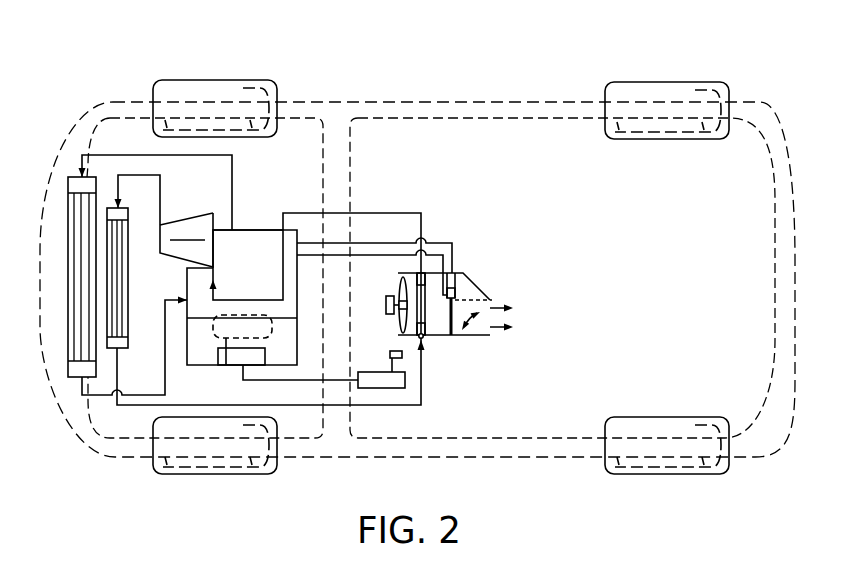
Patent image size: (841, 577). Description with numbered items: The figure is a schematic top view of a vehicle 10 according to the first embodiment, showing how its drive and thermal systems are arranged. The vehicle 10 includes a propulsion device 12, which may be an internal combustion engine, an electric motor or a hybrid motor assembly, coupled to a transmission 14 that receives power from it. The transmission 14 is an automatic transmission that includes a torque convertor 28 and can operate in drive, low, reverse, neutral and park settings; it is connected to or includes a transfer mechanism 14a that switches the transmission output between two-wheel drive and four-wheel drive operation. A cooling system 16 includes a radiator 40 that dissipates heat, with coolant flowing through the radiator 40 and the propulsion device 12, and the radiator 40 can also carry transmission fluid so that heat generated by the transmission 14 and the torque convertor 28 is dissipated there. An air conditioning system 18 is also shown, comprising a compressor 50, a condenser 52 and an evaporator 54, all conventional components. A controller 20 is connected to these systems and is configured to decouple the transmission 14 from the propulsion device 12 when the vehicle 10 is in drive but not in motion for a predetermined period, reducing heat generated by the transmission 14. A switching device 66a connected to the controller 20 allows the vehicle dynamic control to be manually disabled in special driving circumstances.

The vehicle 10 is at (307, 66).
The propulsion device 12 is at (255, 242).
The transmission 14 is at (205, 352).
The transfer mechanism 14a is at (398, 350).
The cooling system 16 is at (127, 150).
The air conditioning system 18 is at (176, 211).
The controller 20 is at (374, 371).
The torque convertor 28 is at (226, 365).
The radiator 40 is at (82, 218).
The compressor 50 is at (198, 228).
The condenser 52 is at (120, 266).
The evaporator 54 is at (425, 305).
The switching device 66a is at (253, 362).